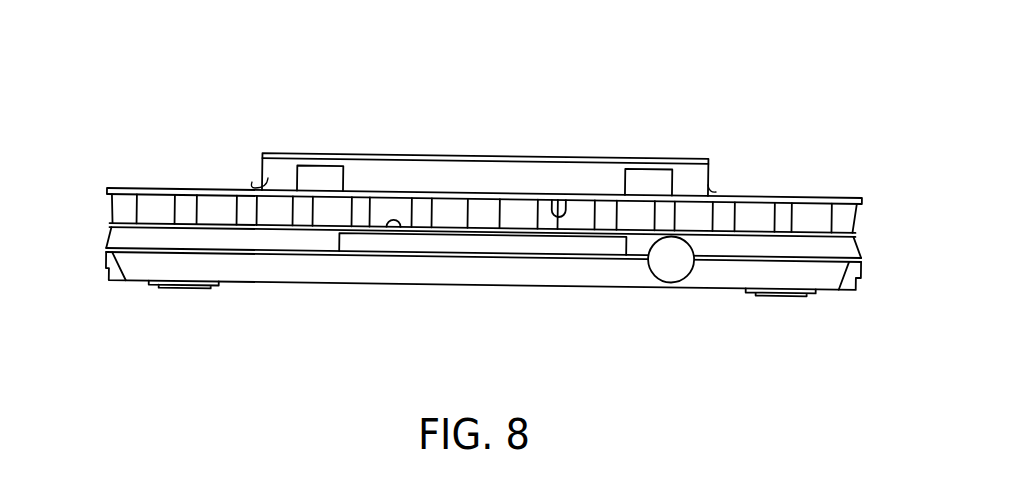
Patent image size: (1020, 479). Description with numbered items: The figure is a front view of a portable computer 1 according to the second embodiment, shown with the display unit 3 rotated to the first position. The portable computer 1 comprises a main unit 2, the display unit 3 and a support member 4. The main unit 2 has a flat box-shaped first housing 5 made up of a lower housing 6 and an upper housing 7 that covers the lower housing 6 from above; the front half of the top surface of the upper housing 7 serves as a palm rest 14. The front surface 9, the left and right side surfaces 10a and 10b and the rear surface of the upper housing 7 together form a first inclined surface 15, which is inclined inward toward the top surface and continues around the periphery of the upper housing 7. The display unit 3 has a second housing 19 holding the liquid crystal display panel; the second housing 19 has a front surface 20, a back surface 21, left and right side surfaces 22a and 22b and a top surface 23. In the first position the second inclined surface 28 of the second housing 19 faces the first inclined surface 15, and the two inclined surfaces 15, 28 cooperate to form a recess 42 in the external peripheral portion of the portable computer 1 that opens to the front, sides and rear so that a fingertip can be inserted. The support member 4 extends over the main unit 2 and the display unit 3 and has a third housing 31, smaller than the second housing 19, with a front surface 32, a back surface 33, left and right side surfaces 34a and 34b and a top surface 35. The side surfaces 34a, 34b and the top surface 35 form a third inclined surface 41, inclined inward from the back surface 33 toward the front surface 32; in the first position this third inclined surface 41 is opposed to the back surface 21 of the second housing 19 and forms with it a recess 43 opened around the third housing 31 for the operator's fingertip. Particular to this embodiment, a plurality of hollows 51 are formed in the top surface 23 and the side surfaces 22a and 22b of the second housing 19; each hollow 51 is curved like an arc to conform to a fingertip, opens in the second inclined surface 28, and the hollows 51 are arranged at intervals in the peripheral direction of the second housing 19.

The portable computer 1 is at (756, 104).
The main unit 2 is at (351, 297).
The display unit 3 is at (148, 180).
The support member 4 is at (404, 148).
The first housing 5 is at (818, 347).
The lower housing 6 is at (731, 277).
The upper housing 7 is at (786, 249).
The front surface 9 is at (178, 240).
The left side surface 10a is at (102, 250).
The right side surface 10b is at (858, 252).
The palm rest 14 is at (400, 229).
The first inclined surface 15 is at (105, 235).
The second housing 19 is at (200, 192).
The front surface 20 is at (527, 232).
The back surface 21 is at (815, 197).
The left side surface 22a is at (110, 207).
The right side surface 22b is at (862, 218).
The top surface 23 is at (603, 219).
The second inclined surface 28 is at (108, 217).
The third housing 31 is at (488, 180).
The front surface 32 is at (560, 217).
The back surface 33 is at (585, 155).
The left side surface 34a is at (276, 188).
The right side surface 34b is at (700, 191).
The top surface 35 is at (458, 170).
The third inclined surface 41 is at (268, 178).
The recess 42 is at (108, 223).
The recess 43 is at (263, 192).
The hollows 51 is at (330, 219).